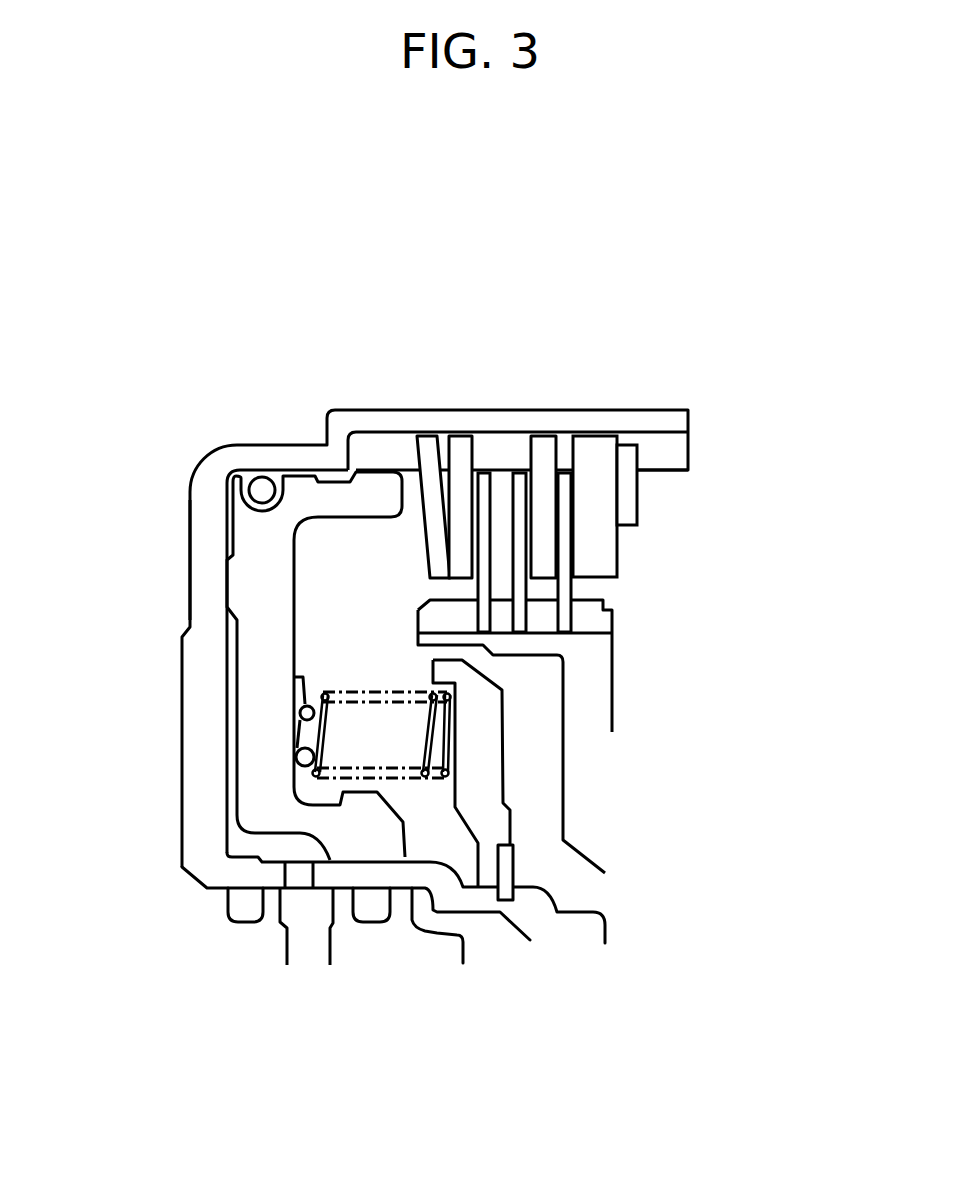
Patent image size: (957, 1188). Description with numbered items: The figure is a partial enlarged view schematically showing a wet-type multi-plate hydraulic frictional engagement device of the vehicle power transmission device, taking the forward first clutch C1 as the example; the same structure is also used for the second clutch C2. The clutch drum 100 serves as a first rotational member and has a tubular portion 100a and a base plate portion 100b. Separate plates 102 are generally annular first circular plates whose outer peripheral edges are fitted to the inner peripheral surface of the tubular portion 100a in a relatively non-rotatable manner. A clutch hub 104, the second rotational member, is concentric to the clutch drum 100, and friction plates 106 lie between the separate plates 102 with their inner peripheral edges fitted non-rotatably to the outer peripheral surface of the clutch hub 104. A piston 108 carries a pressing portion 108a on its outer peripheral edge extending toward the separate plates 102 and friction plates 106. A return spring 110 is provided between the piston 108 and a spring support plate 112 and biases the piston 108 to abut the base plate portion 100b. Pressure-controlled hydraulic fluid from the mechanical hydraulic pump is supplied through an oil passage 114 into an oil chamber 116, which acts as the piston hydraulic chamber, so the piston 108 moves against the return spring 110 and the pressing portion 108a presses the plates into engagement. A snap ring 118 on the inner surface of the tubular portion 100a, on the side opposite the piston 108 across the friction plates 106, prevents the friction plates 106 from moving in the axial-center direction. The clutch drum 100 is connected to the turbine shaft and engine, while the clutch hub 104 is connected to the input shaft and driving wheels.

The clutch drum 100 is at (276, 458).
The tubular portion 100a is at (645, 417).
The base plate portion 100b is at (200, 572).
The separate plates 102 is at (458, 440).
The clutch hub 104 is at (593, 675).
The friction plates 106 is at (563, 583).
The piston 108 is at (253, 692).
The pressing portion 108a is at (377, 487).
The return spring 110 is at (400, 780).
The spring support plate 112 is at (482, 727).
The oil passage 114 is at (290, 882).
The oil chamber 116 is at (237, 837).
The snap ring 118 is at (625, 498).
The forward first clutch C1 is at (693, 259).
The second clutch C2 is at (606, 290).